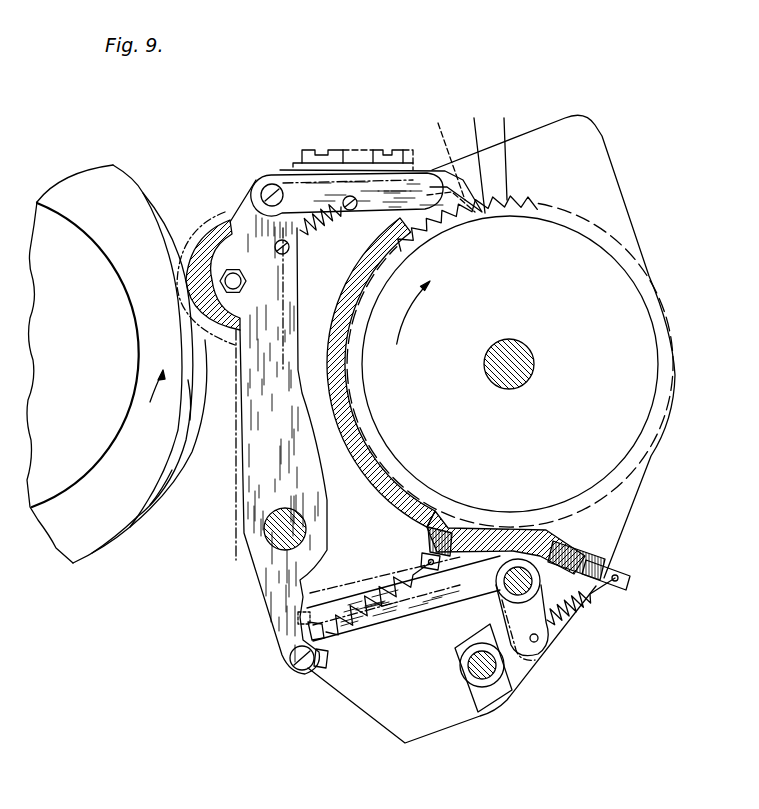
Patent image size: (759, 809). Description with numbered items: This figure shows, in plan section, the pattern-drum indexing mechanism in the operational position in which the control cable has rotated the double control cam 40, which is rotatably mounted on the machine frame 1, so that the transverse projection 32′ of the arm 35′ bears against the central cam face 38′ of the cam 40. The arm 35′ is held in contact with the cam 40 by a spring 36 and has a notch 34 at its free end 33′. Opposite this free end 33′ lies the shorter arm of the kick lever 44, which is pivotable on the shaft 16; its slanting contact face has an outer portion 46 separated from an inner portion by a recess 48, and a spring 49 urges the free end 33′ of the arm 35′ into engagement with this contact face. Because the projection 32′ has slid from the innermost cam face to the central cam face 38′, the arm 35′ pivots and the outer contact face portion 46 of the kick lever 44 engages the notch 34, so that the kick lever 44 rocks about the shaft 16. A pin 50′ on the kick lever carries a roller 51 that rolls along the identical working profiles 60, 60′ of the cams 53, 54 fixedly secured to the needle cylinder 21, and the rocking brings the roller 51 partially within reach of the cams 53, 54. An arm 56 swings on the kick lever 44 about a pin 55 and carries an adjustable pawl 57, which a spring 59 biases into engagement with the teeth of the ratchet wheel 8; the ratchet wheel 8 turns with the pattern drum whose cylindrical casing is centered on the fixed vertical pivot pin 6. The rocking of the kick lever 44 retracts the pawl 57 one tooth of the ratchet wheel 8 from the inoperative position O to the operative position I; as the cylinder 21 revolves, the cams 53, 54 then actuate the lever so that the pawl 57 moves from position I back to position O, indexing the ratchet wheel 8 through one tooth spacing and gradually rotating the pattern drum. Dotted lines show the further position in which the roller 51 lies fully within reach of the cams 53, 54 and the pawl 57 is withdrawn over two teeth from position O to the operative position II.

The machine frame 1 is at (600, 142).
The fixed vertical pivot pin 6 is at (534, 364).
The second ratchet wheel 8 is at (472, 218).
The shaft 16 is at (272, 538).
The needle cylinder 21 is at (98, 370).
The projection 32′ is at (465, 637).
The free end 33′ is at (316, 622).
The notch 34 is at (290, 665).
The arm 35′ is at (381, 634).
The spring 36 is at (565, 614).
The central cam face 38′ is at (463, 642).
The double control cam 40 is at (478, 684).
The kick lever 44 is at (252, 470).
The outer portion 46 is at (322, 669).
The recess 48 is at (298, 617).
The spring 49 is at (393, 578).
The pin 50′ is at (233, 268).
The roller 51 is at (200, 247).
The cam 53 is at (119, 528).
The cam 54 is at (186, 437).
The pin 55 is at (267, 186).
The arm 56 is at (292, 180).
The adjustable pawl 57 is at (418, 175).
The spring 59 is at (316, 218).
The working profile 60 is at (192, 402).
The working profile 60′ is at (158, 481).
The operative position I is at (476, 152).
The operative position II is at (446, 150).
The inoperative position O is at (503, 146).